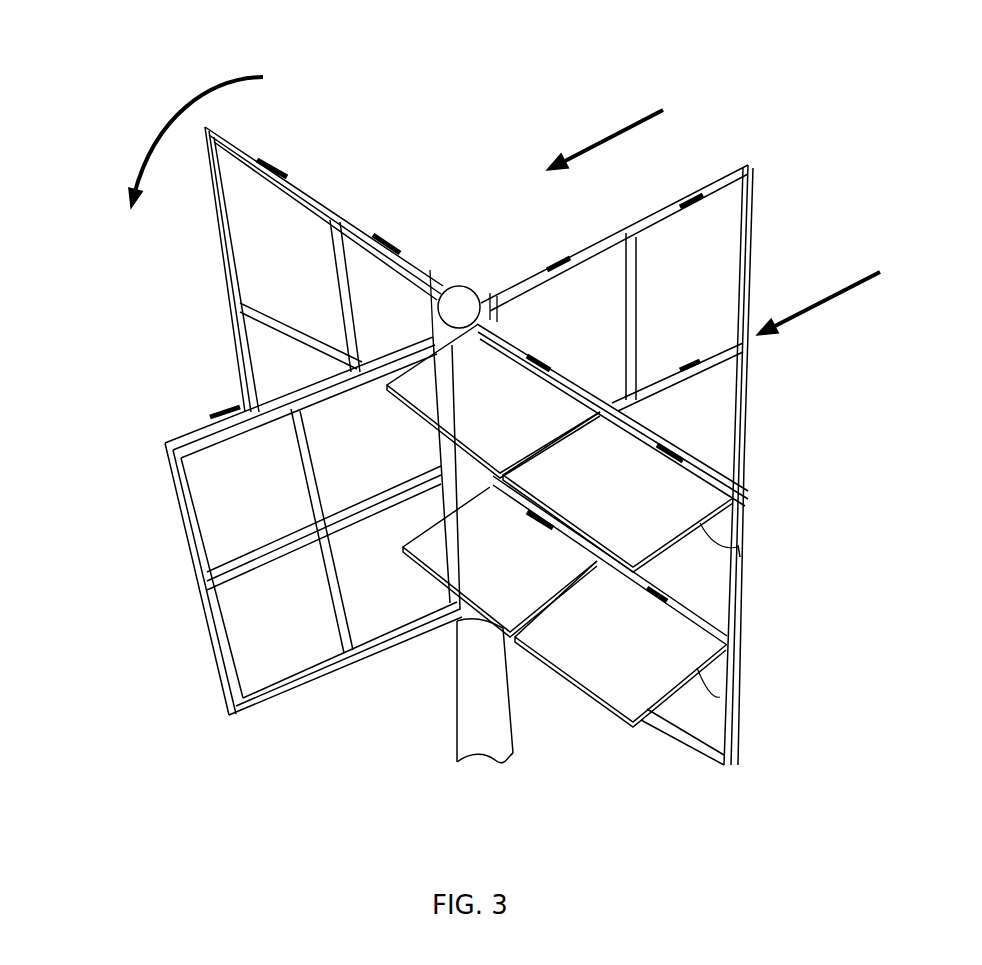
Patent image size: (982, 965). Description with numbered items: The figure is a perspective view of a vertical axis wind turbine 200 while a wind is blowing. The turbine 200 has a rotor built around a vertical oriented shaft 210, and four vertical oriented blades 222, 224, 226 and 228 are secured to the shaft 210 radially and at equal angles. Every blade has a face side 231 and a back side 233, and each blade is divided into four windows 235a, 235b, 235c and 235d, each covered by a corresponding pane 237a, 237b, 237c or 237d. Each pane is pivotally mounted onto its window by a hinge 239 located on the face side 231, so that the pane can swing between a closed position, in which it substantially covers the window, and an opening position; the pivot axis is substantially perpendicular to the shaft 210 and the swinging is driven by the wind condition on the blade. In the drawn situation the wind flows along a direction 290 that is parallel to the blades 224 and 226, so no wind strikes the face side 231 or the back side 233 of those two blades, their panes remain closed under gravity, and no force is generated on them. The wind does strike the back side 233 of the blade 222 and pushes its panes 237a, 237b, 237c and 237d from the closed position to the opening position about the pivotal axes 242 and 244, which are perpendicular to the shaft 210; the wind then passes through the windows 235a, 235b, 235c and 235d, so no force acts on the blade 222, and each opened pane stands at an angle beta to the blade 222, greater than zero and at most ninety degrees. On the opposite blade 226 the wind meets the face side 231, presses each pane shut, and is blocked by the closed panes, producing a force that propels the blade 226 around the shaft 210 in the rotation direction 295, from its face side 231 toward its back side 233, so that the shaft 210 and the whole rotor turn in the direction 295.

The vertical axis wind turbine 200 is at (489, 22).
The vertical oriented shaft 210 is at (487, 705).
The vertical oriented blade 222 is at (656, 544).
The vertical oriented blade 224 is at (723, 178).
The vertical oriented blade 226 is at (328, 206).
The vertical oriented blade 228 is at (262, 565).
The face side 231 is at (740, 548).
The back side 233 is at (700, 457).
The window 235a is at (363, 432).
The window 235b is at (233, 473).
The window 235c is at (384, 575).
The window 235d is at (248, 640).
The pane 237a is at (525, 438).
The pane 237b is at (662, 533).
The pane 237c is at (535, 606).
The pane 237d is at (667, 691).
The hinge 239 is at (538, 356).
The pivotal axis 242 is at (750, 503).
The pivotal axis 244 is at (727, 642).
The wind flow direction 290 is at (713, 214).
The rotation direction 295 is at (220, 137).